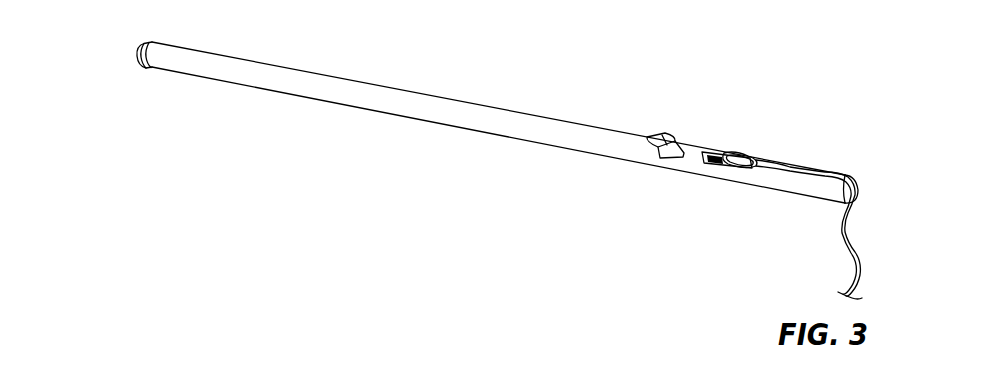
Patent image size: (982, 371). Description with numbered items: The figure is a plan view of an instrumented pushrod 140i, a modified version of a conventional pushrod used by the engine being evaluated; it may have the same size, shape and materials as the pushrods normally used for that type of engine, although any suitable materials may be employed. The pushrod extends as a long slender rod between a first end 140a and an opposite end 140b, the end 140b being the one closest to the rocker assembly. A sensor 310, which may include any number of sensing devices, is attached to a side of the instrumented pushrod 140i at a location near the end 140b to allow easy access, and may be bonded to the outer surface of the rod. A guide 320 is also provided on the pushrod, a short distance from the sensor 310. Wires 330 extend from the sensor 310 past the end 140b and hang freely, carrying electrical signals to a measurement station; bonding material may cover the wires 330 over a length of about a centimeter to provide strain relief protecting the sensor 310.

The end 140a is at (139, 45).
The end 140b is at (855, 200).
The instrumented pushrod 140i is at (508, 124).
The sensor 310 is at (716, 152).
The guide 320 is at (663, 133).
The wires 330 is at (845, 244).